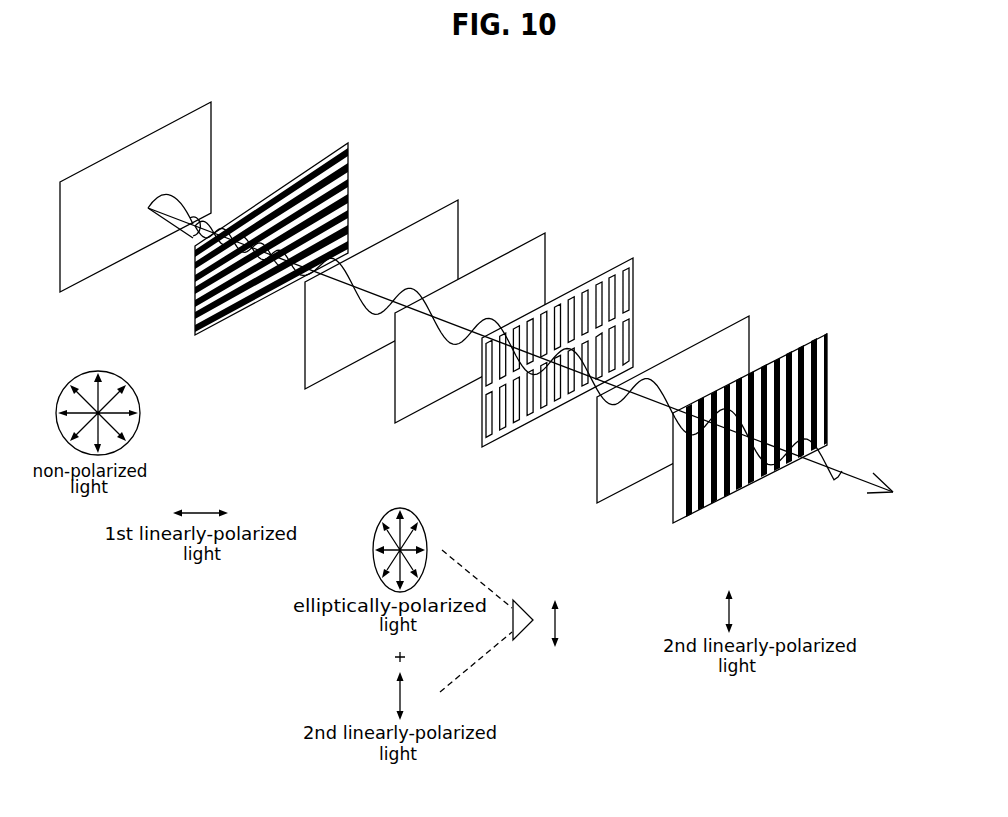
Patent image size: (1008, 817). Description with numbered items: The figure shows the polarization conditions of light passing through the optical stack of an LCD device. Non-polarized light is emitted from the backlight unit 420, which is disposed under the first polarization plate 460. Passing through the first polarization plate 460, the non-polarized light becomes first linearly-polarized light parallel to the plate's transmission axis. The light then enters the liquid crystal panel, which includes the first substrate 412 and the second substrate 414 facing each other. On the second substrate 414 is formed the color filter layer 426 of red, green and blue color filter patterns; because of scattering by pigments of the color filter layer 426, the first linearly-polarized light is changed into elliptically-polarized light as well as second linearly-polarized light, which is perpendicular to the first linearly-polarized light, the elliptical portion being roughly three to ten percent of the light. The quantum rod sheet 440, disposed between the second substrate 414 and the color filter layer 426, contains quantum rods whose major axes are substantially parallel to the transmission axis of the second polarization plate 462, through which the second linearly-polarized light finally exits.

The backlight unit 420 is at (135, 140).
The first polarization plate 460 is at (302, 166).
The first substrate 412 is at (433, 212).
The color filter layer 426 is at (518, 246).
The quantum rod sheet 440 is at (587, 272).
The second substrate 414 is at (723, 325).
The second polarization plate 462 is at (800, 346).